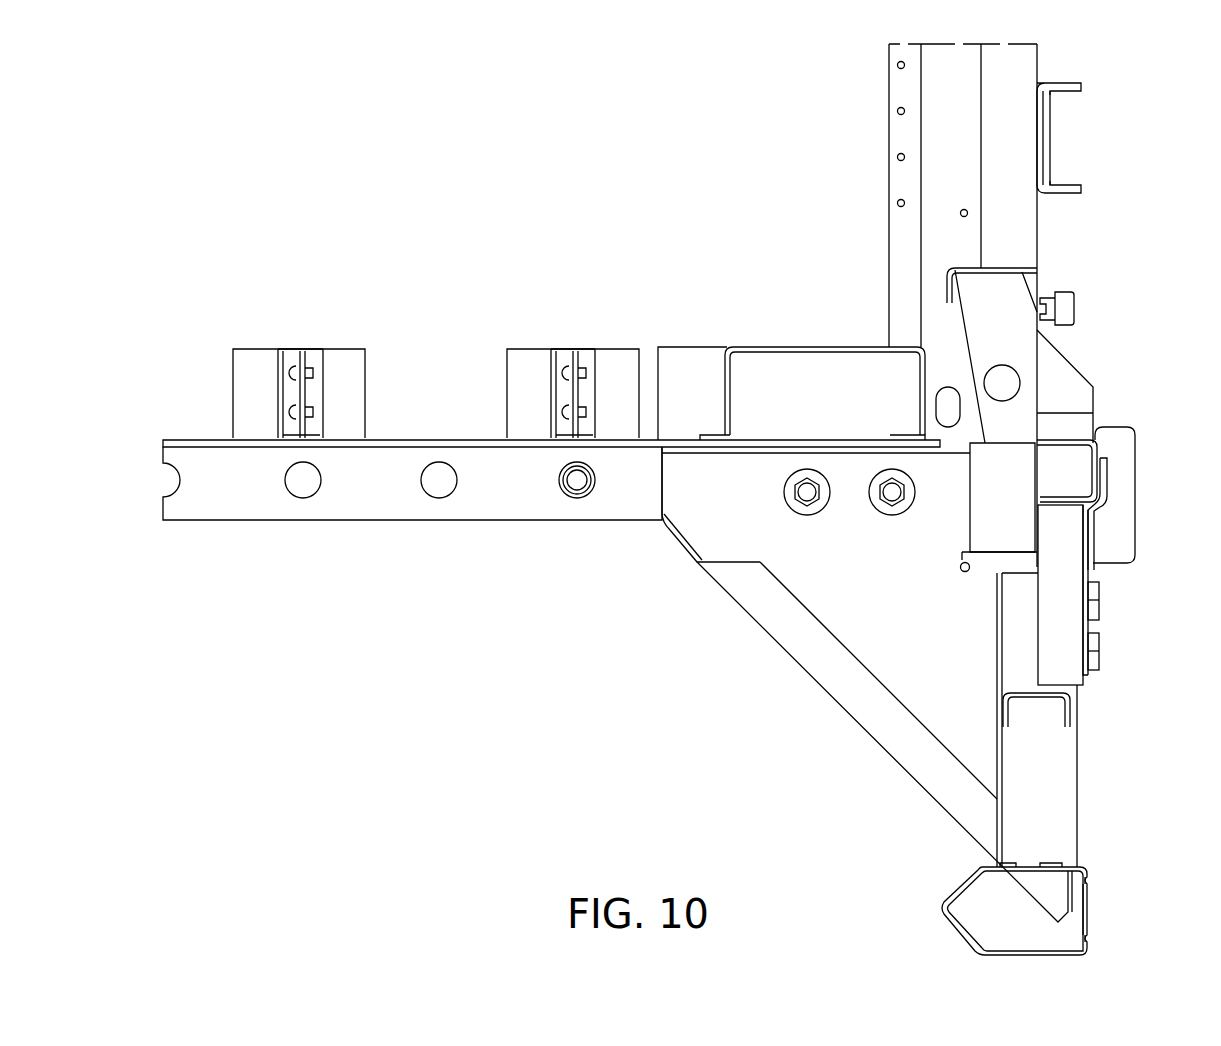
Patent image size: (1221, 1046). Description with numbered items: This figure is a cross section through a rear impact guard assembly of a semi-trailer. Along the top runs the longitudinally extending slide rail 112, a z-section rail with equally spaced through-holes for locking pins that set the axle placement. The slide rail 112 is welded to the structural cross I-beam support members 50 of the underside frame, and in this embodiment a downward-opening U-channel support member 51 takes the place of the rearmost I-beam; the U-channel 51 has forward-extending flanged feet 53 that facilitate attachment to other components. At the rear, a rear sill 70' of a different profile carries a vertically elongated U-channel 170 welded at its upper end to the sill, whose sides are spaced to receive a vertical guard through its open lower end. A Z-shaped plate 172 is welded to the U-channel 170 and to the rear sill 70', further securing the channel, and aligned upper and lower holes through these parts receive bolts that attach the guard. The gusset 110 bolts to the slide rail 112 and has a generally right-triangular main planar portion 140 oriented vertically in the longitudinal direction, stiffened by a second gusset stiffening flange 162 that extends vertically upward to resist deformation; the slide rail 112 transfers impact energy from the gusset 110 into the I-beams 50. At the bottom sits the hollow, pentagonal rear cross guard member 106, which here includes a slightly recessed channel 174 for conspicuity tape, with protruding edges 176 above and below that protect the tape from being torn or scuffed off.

The I-beam support member 50 is at (302, 349).
The U-channel support member 51 is at (785, 347).
The flanged feet 53 is at (903, 433).
The slide rail 112 is at (183, 505).
The gusset 110 is at (740, 547).
The main planar portion 140 is at (823, 580).
The second gusset stiffening flange 162 is at (835, 662).
The rear sill 70' is at (976, 442).
The Z-shaped plate 172 is at (1107, 480).
The U-channel 170 is at (1073, 650).
The protruding edges 176 is at (1090, 868).
The recessed channel 174 is at (1087, 905).
The rear cross guard member 106 is at (958, 932).